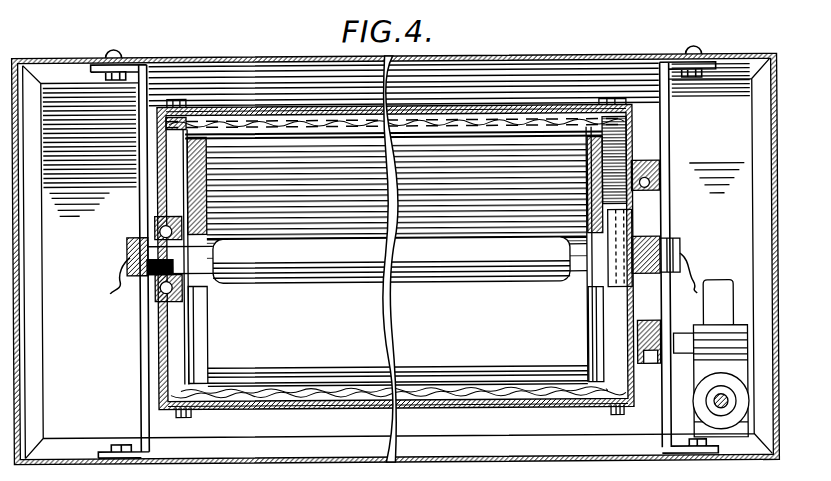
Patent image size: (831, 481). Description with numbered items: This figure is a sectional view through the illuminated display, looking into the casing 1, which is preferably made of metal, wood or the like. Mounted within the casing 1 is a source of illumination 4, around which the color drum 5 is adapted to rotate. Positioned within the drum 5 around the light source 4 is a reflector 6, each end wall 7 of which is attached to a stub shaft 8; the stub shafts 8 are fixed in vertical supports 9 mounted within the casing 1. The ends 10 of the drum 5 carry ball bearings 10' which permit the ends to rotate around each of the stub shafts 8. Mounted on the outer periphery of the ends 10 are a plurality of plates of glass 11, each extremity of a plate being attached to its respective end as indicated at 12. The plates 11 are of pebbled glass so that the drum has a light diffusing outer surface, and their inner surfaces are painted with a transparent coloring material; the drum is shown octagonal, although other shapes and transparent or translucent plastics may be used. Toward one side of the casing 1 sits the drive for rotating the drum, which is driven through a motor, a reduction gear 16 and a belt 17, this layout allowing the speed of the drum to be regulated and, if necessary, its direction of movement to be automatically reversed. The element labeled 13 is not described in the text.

The casing 1 is at (545, 122).
The source of illumination 4 is at (315, 277).
The color drum 5 is at (481, 106).
The reflector 6 is at (293, 388).
The end wall 7 is at (189, 331).
The stub shaft 8 is at (136, 287).
The vertical support 9 is at (139, 200).
The end of the drum 10 is at (406, 257).
The ball bearing 10' is at (400, 231).
The plate of glass 11 is at (518, 116).
The plate attachment 12 is at (178, 98).
The bolt 13 is at (613, 100).
The reduction gear 16 is at (733, 309).
The belt 17 is at (642, 162).